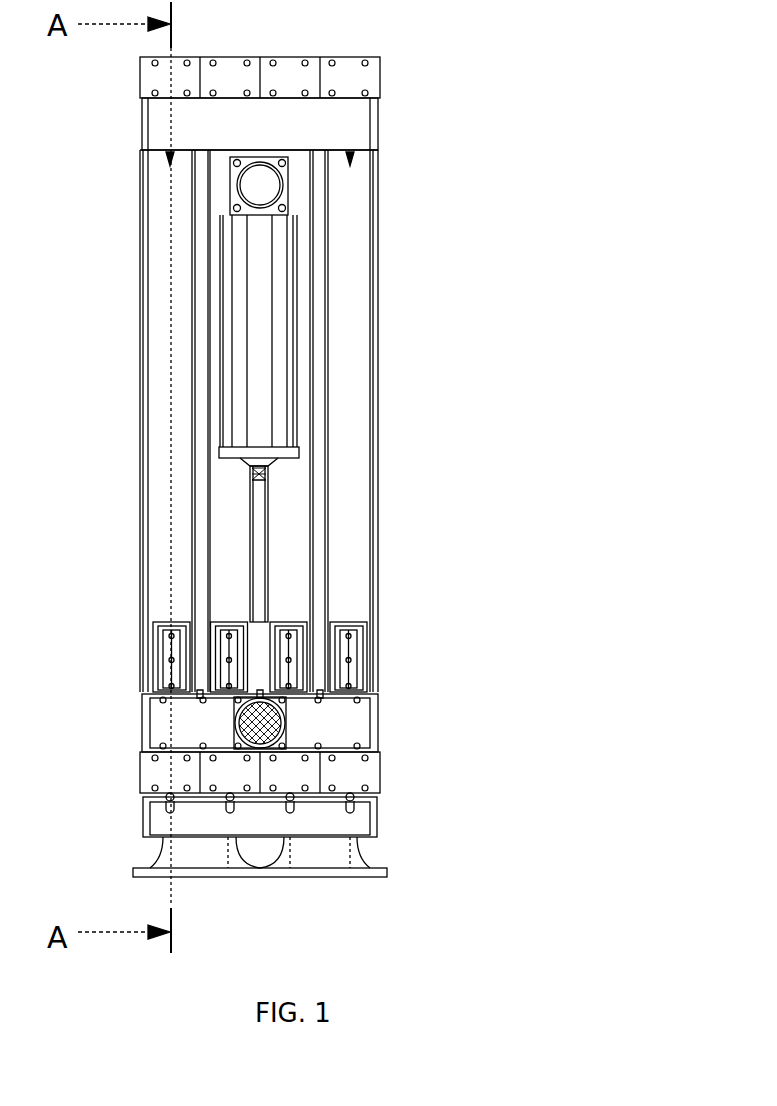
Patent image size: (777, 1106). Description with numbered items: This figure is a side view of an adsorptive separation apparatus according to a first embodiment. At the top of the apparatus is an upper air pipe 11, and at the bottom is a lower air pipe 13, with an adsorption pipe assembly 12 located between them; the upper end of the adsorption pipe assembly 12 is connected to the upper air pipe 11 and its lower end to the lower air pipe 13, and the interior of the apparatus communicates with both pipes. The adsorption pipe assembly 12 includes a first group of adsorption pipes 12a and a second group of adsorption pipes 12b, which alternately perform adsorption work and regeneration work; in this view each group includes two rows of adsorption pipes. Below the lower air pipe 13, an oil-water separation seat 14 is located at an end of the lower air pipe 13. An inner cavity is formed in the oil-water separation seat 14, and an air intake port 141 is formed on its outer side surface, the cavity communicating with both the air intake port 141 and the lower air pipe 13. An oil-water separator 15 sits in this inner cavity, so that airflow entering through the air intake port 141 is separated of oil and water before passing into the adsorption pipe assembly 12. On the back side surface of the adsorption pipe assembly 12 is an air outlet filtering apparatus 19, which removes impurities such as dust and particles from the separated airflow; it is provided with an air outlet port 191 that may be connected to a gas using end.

The upper air pipe 11 is at (352, 80).
The adsorption pipe assembly 12 is at (377, 424).
The first group of adsorption pipes 12a is at (348, 497).
The second group of adsorption pipes 12b is at (227, 585).
The lower air pipe 13 is at (352, 775).
The oil-water separation seat 14 is at (272, 700).
The air intake port 141 is at (290, 735).
The oil-water separator 15 is at (236, 722).
The air outlet filtering apparatus 19 is at (290, 364).
The air outlet port 191 is at (282, 190).